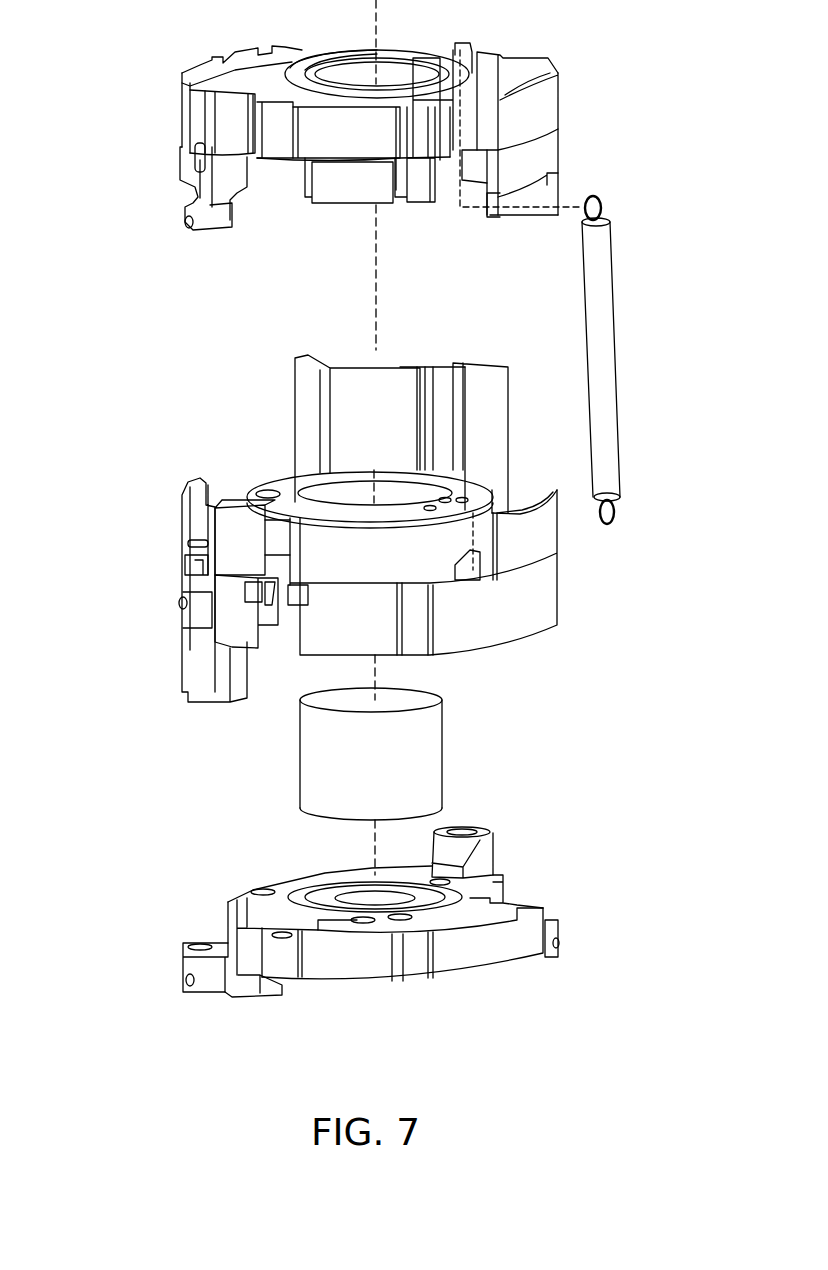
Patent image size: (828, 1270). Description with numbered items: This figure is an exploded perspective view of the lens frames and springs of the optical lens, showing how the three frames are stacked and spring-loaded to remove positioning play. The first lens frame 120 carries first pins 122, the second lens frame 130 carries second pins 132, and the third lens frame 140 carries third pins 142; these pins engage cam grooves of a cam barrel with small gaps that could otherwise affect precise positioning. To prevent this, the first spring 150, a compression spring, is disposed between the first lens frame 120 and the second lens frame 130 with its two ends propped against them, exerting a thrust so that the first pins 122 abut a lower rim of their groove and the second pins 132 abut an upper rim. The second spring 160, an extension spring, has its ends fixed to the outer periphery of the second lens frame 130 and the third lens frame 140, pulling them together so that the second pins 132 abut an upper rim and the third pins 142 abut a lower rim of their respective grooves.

The first lens frame 120 is at (485, 957).
The first pins 122 is at (185, 980).
The second lens frame 130 is at (542, 595).
The second pins 132 is at (180, 604).
The third lens frame 140 is at (551, 122).
The third pins 142 is at (183, 220).
The first spring 150 is at (425, 757).
The second spring 160 is at (598, 300).